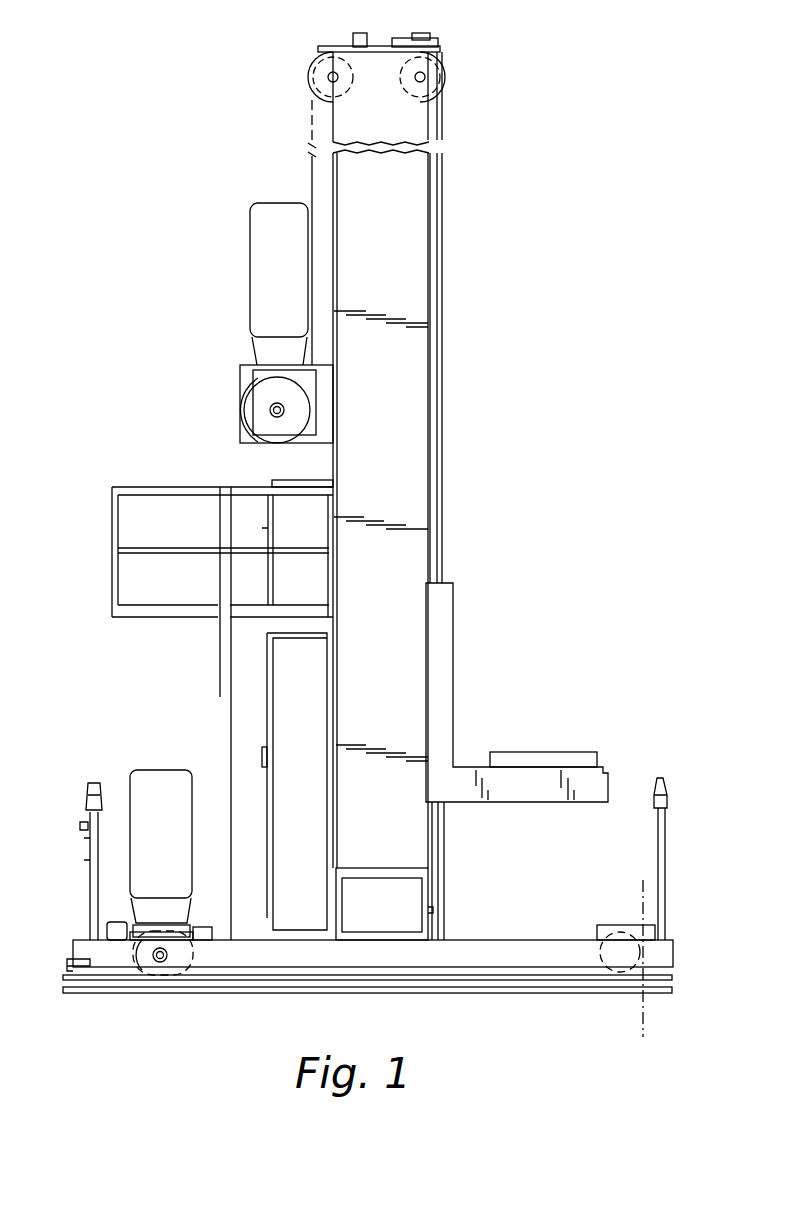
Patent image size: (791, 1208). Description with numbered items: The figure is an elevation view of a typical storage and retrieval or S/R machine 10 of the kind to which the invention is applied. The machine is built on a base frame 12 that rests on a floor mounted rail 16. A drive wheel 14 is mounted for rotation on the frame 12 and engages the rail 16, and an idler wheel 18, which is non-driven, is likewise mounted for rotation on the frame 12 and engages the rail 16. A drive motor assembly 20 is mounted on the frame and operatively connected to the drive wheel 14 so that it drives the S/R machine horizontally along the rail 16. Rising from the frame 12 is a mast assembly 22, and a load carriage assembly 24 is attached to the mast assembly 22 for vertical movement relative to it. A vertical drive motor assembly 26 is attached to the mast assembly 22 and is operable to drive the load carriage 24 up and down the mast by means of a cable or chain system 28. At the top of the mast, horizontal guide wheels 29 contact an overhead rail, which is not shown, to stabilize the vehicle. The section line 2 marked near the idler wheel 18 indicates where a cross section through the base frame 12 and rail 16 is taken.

The storage and retrieval machine 10 is at (445, 265).
The base frame 12 is at (527, 957).
The drive wheel 14 is at (183, 935).
The floor mounted rail 16 is at (495, 985).
The idler wheel 18 is at (602, 950).
The drive motor assembly 20 is at (132, 769).
The mast assembly 22 is at (438, 407).
The load carriage assembly 24 is at (454, 648).
The vertical drive motor assembly 26 is at (249, 270).
The cable or chain system 28 is at (443, 180).
The horizontal guide wheels 29 is at (417, 33).
The section line 2- 2 is at (643, 880).